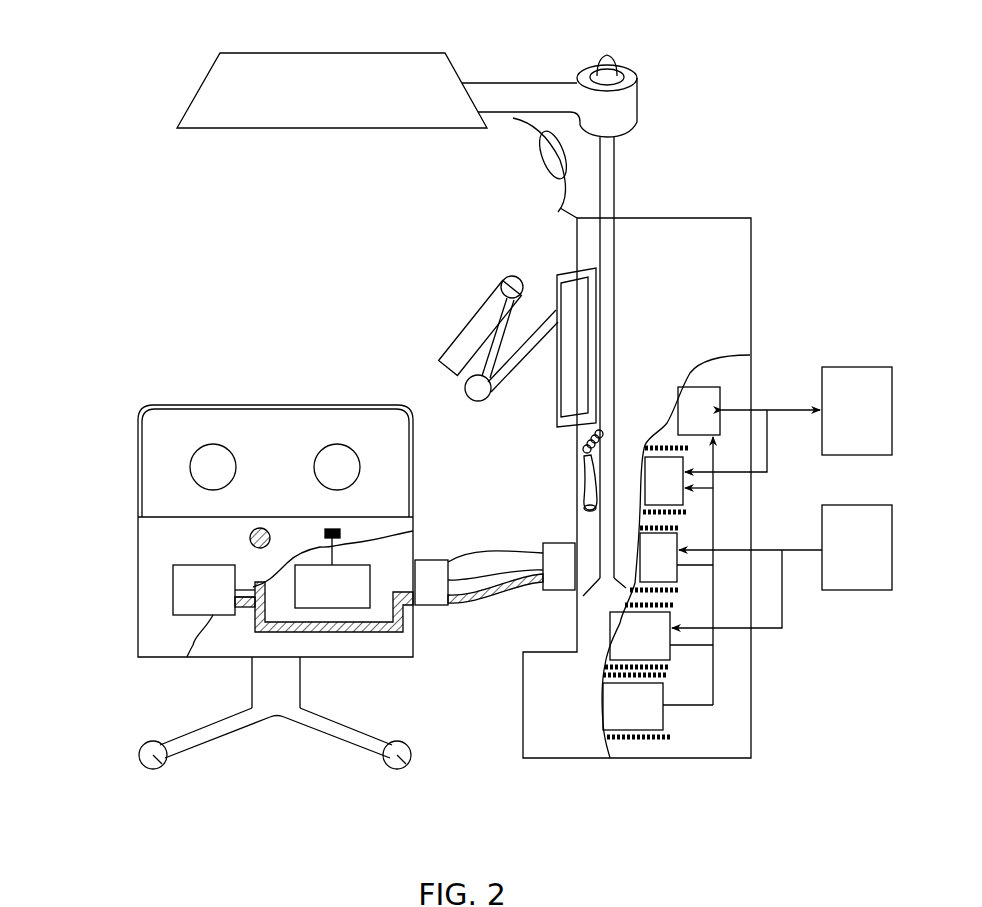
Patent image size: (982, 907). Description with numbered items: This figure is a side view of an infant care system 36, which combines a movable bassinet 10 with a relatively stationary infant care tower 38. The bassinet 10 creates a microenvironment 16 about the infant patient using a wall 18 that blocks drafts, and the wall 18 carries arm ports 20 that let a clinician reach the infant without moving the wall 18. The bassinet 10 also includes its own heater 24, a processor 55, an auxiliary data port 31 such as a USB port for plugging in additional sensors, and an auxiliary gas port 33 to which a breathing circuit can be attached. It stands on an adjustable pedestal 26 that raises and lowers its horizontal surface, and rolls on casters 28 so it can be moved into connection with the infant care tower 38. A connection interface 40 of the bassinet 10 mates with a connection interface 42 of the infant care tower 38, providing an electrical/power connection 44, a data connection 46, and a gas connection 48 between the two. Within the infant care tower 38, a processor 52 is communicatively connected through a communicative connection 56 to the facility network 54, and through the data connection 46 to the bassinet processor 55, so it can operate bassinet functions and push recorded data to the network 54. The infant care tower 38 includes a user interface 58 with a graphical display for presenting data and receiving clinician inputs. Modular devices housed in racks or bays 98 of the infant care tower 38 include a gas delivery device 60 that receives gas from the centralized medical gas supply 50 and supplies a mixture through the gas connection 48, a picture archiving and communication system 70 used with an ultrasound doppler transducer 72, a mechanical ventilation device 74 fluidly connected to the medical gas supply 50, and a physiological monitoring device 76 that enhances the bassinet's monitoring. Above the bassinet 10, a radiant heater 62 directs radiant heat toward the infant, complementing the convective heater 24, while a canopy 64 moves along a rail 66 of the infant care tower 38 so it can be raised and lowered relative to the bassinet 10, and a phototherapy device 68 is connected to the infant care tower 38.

The bassinet 10 is at (102, 552).
The microenvironment 16 is at (260, 465).
The wall 18 is at (298, 422).
The arm port 20 is at (201, 480).
The heater 24 is at (192, 603).
The adjustable pedestal 26 is at (272, 683).
The casters 28 is at (160, 770).
The auxiliary data port 31 is at (342, 537).
The auxiliary gas port 33 is at (272, 540).
The infant care system 36 is at (117, 205).
The infant care tower 38 is at (765, 222).
The connection interface 40 is at (432, 560).
The connection interface 42 is at (557, 543).
The electrical/power connection 44 is at (482, 550).
The data connection 46 is at (500, 595).
The gas connection 48 is at (468, 602).
The centralized medical gas supply 50 is at (857, 547).
The processor 52 is at (687, 423).
The network 54 is at (845, 424).
The processor 55 is at (320, 599).
The communicative connection 56 is at (790, 410).
The user interface 58 is at (555, 375).
The gas delivery device 60 is at (646, 570).
The radiant heater 62 is at (535, 173).
The canopy 64 is at (318, 103).
The rail 66 is at (607, 185).
The phototherapy device 68 is at (475, 322).
The picture archiving and communication system (PACS) 70 is at (652, 493).
The ultrasound doppler transducer 72 is at (582, 463).
The mechanical ventilation device 74 is at (628, 648).
The physiological monitoring device 76 is at (621, 719).
The racks or bays 98 is at (725, 493).